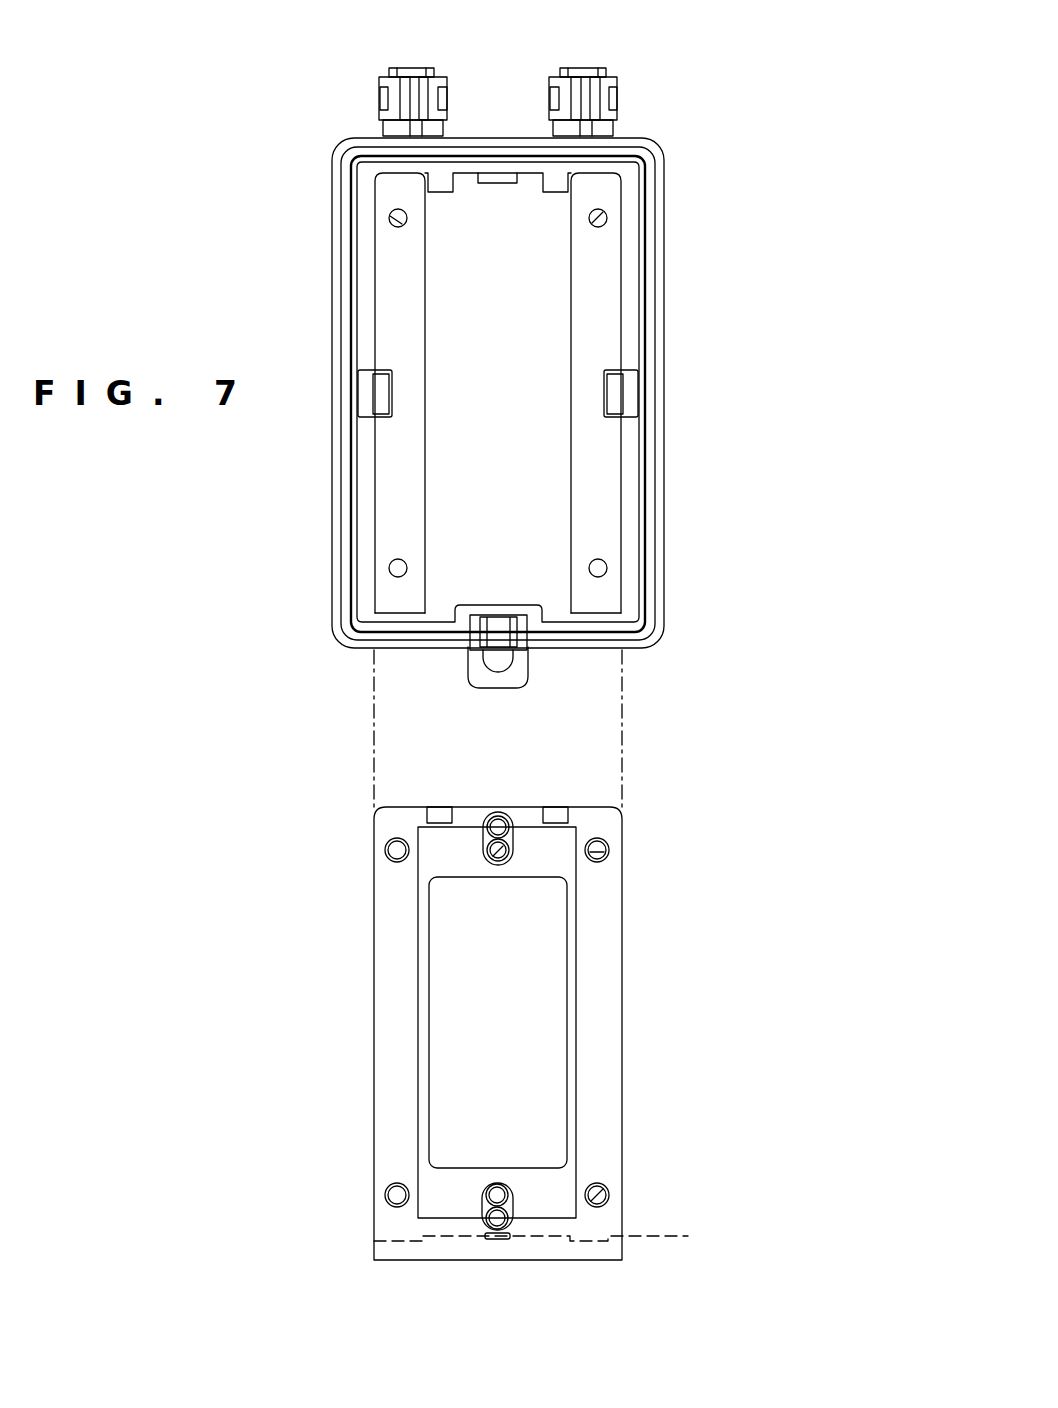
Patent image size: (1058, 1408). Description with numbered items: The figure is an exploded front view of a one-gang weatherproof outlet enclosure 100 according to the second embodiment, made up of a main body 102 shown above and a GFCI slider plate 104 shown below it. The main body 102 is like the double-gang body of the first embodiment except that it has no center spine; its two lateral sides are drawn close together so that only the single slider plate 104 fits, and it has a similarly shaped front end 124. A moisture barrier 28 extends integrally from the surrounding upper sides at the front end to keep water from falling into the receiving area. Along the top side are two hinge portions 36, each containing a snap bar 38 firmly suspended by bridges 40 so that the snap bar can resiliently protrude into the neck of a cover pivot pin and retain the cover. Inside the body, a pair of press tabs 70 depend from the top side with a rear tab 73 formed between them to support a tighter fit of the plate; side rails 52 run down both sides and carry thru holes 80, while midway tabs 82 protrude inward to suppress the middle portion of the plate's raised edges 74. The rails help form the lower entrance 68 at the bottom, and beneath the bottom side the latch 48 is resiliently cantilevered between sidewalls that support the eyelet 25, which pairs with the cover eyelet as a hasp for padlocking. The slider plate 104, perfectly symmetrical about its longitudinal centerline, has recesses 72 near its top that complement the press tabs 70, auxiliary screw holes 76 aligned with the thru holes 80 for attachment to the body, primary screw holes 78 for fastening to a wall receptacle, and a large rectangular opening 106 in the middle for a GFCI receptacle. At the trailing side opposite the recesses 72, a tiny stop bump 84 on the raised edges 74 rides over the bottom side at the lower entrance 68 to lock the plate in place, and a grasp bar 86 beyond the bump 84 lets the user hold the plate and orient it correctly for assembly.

The one-gang weatherproof outlet enclosure 100 is at (290, 188).
The moisture barrier 28 is at (648, 283).
The main body 102 is at (680, 393).
The front end 124 is at (665, 533).
The hinge portion 36 is at (443, 74).
The snap bar 38 is at (410, 100).
The bridge 40 is at (413, 68).
The press tab 70 is at (557, 182).
The rear tab 73 is at (498, 187).
The thru hole 80 is at (404, 222).
The midway tab 82 is at (382, 393).
The side rail 52 is at (430, 505).
The lower entrance 68 is at (393, 618).
The latch 48 is at (497, 633).
The eyelet 25 is at (513, 672).
The recess 72 is at (556, 812).
The raised edge 74 is at (395, 945).
The auxiliary screw hole 76 is at (386, 846).
The primary screw hole 78 is at (495, 856).
The rectangular opening 106 is at (555, 1010).
The GFCI slider plate 104 is at (622, 1073).
The grasp bar 86 is at (552, 1233).
The stop bump 84 is at (495, 1240).